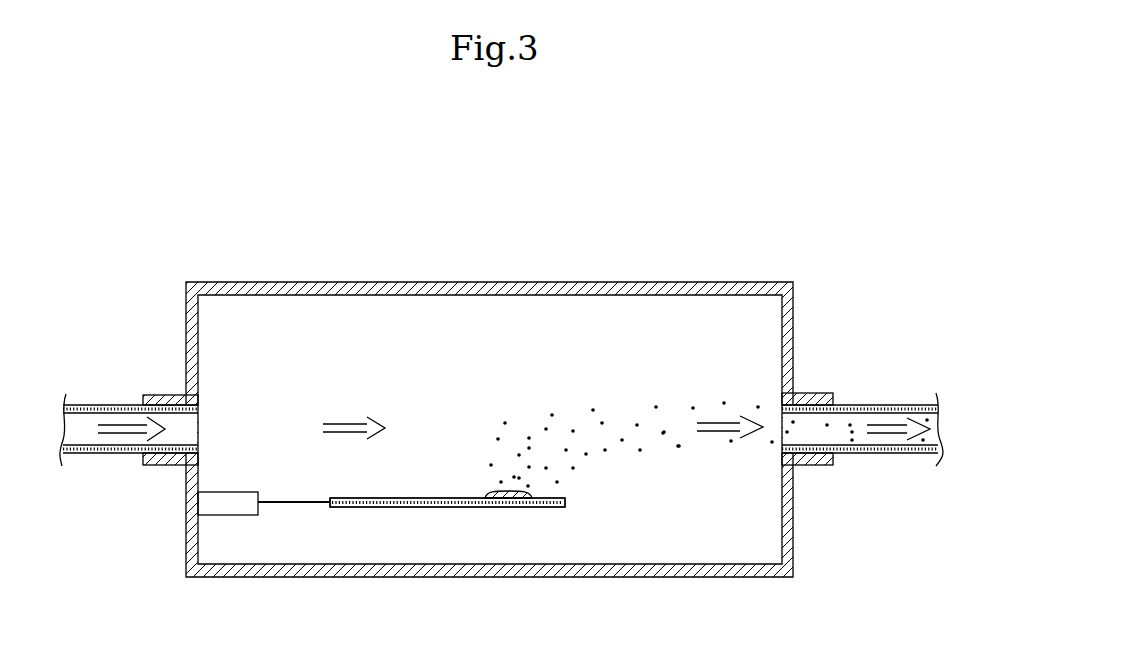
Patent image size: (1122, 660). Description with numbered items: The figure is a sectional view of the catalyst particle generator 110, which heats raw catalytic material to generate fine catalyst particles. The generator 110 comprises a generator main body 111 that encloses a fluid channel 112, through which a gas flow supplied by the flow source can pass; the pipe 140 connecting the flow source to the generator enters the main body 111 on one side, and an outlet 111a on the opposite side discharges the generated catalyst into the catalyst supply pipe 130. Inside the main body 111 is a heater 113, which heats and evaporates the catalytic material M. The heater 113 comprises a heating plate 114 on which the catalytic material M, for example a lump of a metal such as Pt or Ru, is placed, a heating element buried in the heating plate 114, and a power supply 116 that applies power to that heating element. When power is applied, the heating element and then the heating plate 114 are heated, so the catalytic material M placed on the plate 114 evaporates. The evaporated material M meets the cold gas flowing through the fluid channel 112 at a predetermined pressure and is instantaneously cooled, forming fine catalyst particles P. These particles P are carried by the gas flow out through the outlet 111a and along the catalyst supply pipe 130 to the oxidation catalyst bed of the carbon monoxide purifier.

The catalyst particle generator 110 is at (548, 384).
The generator main body 111 is at (303, 282).
The outlet 111a is at (782, 428).
The fluid channel 112 is at (412, 345).
The heater 113 is at (398, 518).
The heating plate 114 is at (548, 510).
The power supply 116 is at (228, 498).
The catalyst supply pipe 130 is at (889, 405).
The pipe 140 is at (100, 405).
The catalytic material M is at (493, 490).
The fine catalyst particles P is at (622, 407).